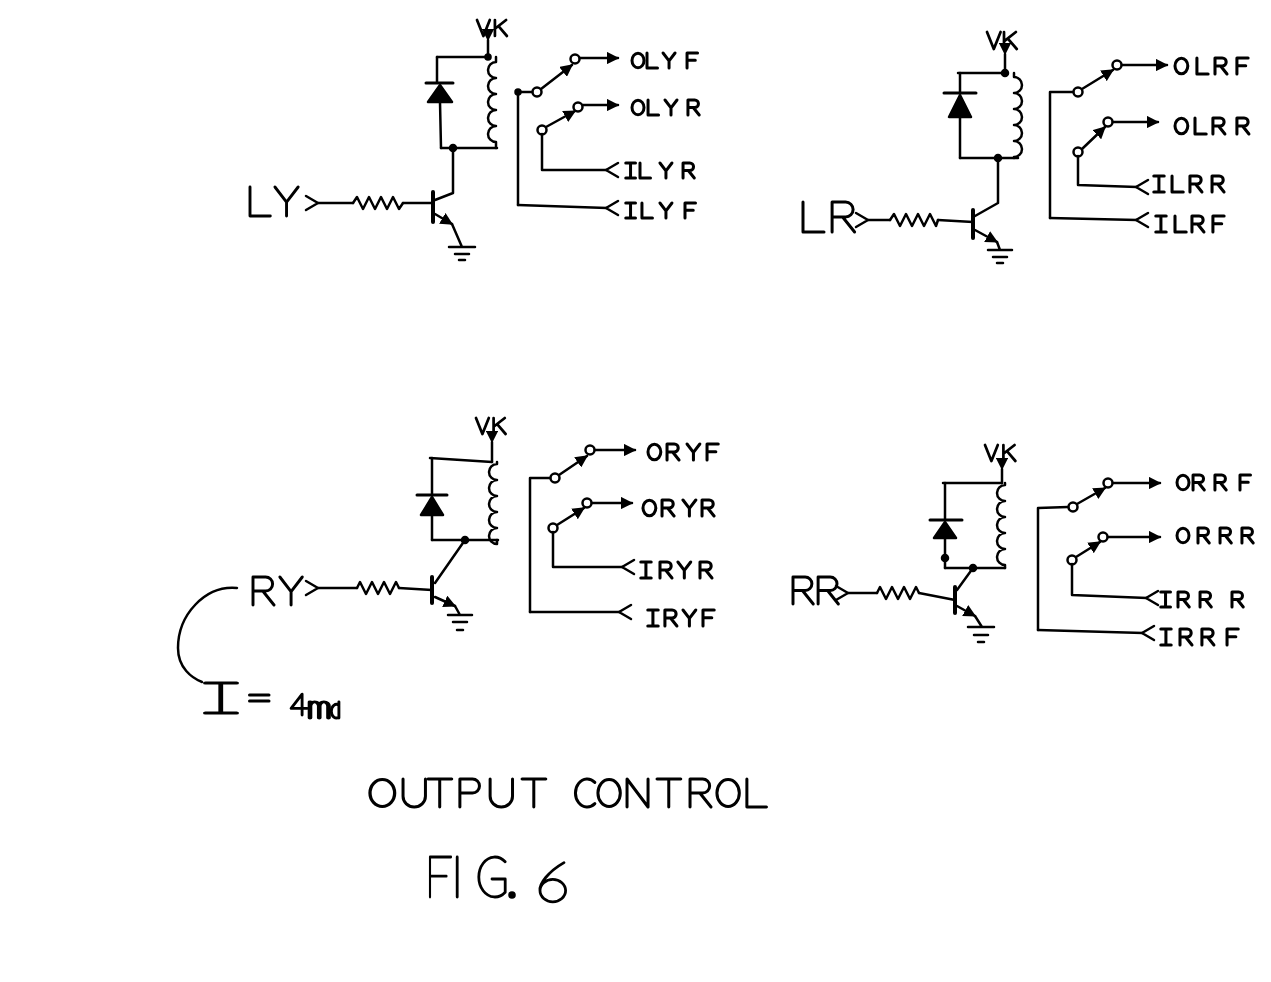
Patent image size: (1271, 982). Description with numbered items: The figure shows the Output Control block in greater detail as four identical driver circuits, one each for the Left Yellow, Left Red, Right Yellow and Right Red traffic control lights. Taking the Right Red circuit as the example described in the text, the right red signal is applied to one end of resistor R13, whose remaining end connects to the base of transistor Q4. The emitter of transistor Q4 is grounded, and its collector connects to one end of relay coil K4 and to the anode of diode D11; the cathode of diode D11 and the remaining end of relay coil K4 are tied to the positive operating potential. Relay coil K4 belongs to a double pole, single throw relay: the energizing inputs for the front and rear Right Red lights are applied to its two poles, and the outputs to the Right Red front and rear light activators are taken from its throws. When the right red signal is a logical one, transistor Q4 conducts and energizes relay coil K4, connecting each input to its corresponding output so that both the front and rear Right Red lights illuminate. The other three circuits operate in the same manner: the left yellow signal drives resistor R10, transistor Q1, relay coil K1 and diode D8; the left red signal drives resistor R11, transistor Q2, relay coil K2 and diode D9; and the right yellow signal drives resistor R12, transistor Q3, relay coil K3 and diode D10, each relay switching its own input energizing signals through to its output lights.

The diode D8 is at (422, 102).
The diode D9 is at (939, 115).
The diode D10 is at (411, 499).
The diode D11 is at (924, 525).
The relay coil K1 is at (476, 119).
The relay coil K2 is at (980, 132).
The relay coil K3 is at (460, 516).
The relay coil K4 is at (957, 534).
The transistor Q1 is at (475, 204).
The transistor Q2 is at (1018, 212).
The transistor Q3 is at (471, 585).
The transistor Q4 is at (991, 605).
The resistor R10 is at (378, 221).
The resistor R11 is at (919, 237).
The resistor R12 is at (375, 593).
The resistor R13 is at (898, 616).